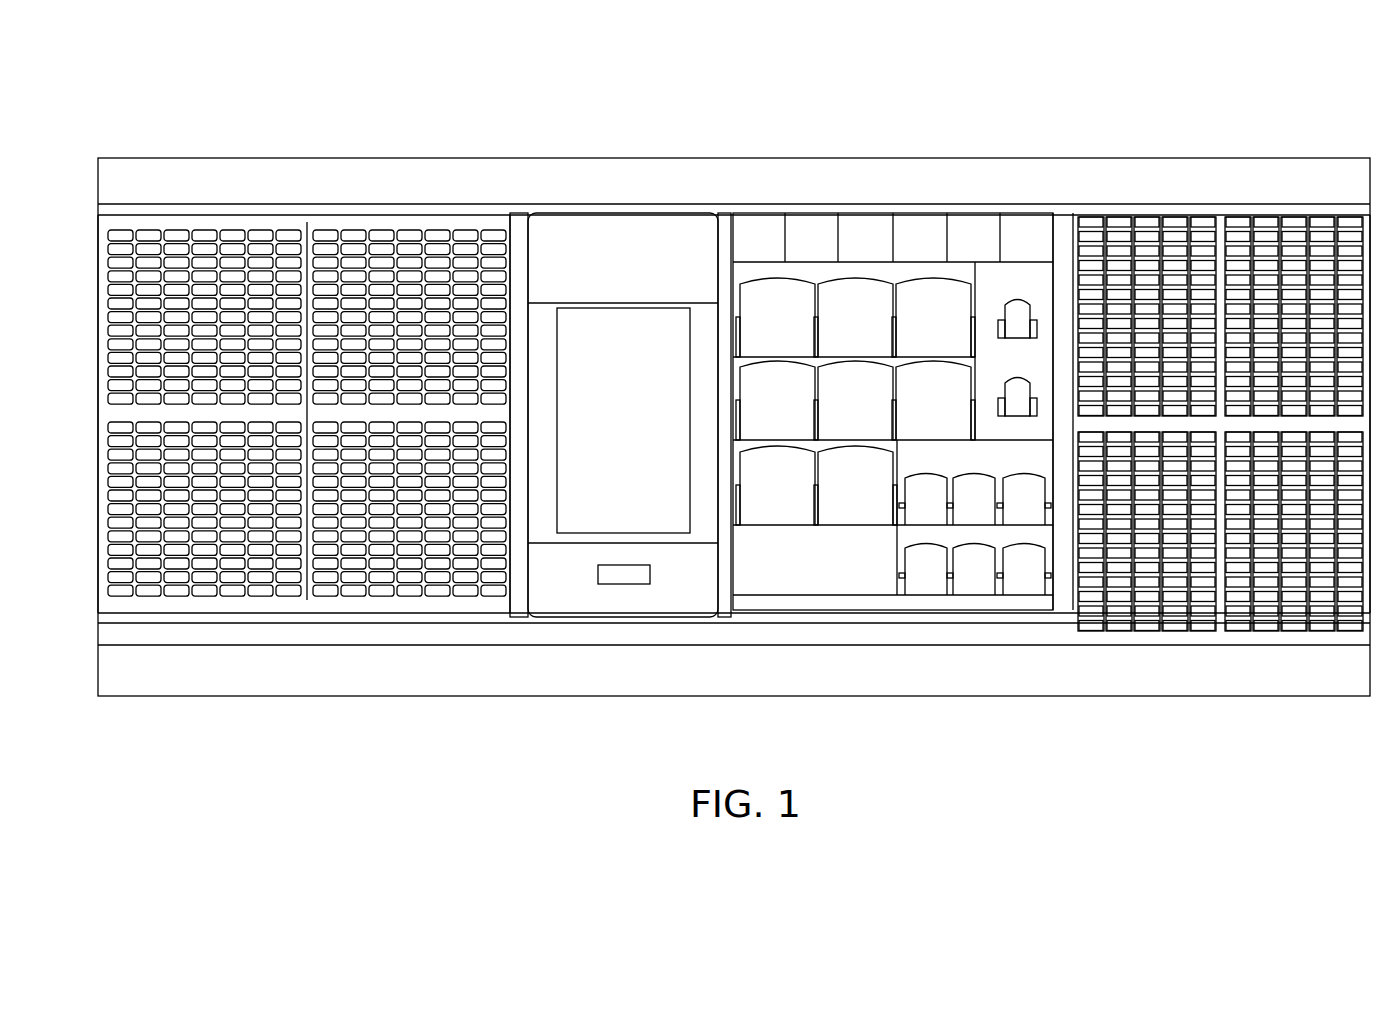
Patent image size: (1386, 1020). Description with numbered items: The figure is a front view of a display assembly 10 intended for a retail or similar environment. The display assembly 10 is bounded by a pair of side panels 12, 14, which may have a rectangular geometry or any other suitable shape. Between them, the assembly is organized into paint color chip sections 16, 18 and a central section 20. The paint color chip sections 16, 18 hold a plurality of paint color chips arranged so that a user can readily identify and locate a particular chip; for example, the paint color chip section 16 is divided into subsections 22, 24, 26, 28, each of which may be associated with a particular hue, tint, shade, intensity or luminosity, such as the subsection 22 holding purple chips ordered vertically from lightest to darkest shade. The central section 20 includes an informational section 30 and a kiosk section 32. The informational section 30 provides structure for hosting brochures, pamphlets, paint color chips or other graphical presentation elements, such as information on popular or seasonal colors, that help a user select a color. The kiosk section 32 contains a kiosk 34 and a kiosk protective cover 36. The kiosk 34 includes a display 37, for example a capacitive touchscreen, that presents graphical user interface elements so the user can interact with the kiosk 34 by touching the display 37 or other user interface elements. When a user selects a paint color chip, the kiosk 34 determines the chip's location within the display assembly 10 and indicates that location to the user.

The display assembly 10 is at (1106, 87).
The side panel 12 is at (100, 306).
The side panel 14 is at (1367, 306).
The paint color chip section 16 is at (263, 204).
The paint color chip section 18 is at (1220, 200).
The central section 20 is at (977, 234).
The subsection 22 is at (313, 220).
The subsection 24 is at (443, 220).
The subsection 26 is at (228, 602).
The subsection 28 is at (425, 602).
The informational section 30 is at (828, 234).
The kiosk section 32 is at (672, 238).
The kiosk 34 is at (562, 604).
The kiosk protective cover 36 is at (570, 302).
The display 37 is at (558, 422).